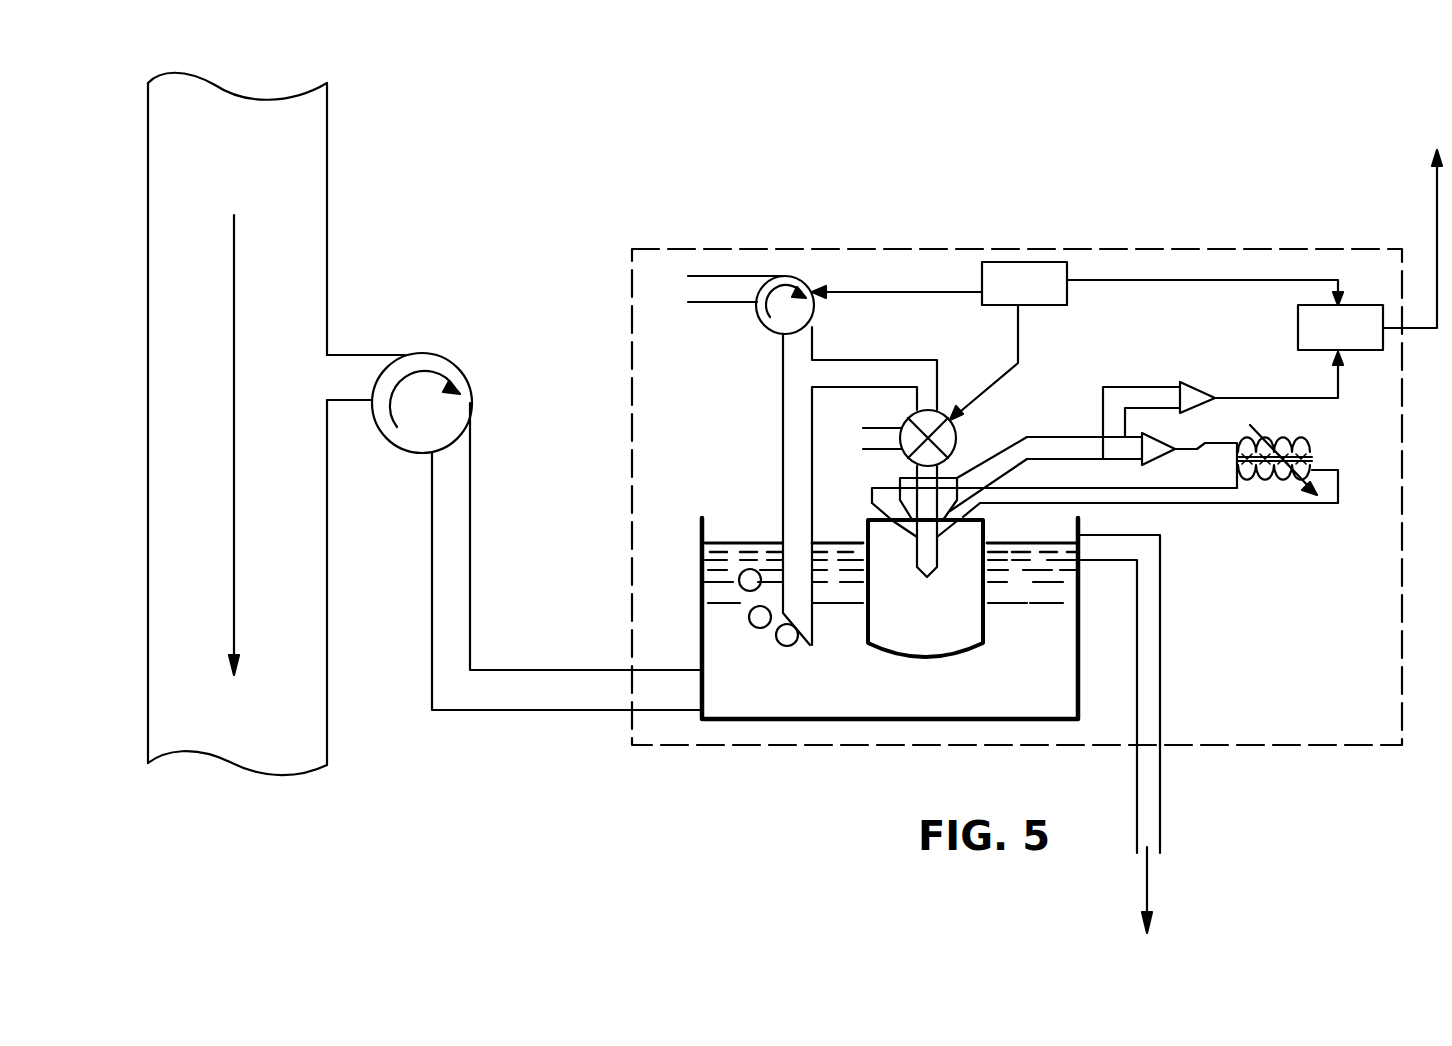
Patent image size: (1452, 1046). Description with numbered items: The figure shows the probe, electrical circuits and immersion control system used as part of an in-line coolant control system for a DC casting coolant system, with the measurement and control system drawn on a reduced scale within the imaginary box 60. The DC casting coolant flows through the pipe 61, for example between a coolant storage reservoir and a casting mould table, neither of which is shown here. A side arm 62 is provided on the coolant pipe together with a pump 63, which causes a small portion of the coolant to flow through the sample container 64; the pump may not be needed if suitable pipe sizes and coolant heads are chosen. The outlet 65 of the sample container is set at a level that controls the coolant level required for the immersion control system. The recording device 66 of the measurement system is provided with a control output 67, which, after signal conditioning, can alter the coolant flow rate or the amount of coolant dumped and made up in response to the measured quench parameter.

The imaginary box 60 is at (630, 743).
The pipe 61 is at (318, 173).
The side arm 62 is at (362, 353).
The pump 63 is at (473, 400).
The sample container 64 is at (808, 720).
The outlet line 65 is at (1162, 790).
The recording device 66 is at (1358, 345).
The control output 67 is at (1437, 196).